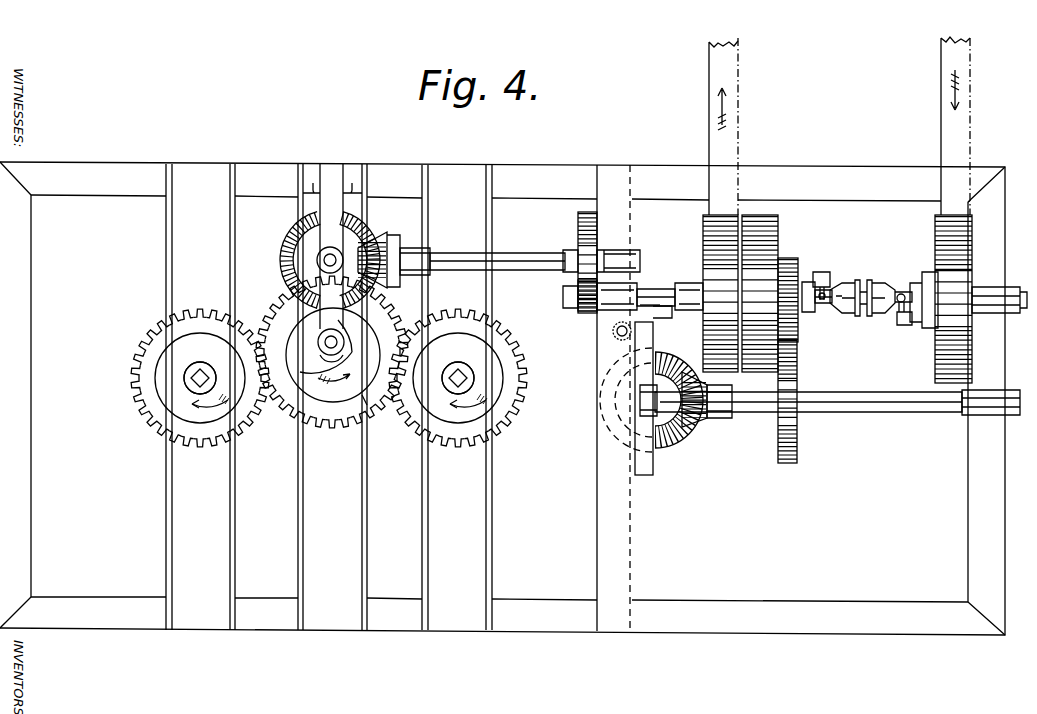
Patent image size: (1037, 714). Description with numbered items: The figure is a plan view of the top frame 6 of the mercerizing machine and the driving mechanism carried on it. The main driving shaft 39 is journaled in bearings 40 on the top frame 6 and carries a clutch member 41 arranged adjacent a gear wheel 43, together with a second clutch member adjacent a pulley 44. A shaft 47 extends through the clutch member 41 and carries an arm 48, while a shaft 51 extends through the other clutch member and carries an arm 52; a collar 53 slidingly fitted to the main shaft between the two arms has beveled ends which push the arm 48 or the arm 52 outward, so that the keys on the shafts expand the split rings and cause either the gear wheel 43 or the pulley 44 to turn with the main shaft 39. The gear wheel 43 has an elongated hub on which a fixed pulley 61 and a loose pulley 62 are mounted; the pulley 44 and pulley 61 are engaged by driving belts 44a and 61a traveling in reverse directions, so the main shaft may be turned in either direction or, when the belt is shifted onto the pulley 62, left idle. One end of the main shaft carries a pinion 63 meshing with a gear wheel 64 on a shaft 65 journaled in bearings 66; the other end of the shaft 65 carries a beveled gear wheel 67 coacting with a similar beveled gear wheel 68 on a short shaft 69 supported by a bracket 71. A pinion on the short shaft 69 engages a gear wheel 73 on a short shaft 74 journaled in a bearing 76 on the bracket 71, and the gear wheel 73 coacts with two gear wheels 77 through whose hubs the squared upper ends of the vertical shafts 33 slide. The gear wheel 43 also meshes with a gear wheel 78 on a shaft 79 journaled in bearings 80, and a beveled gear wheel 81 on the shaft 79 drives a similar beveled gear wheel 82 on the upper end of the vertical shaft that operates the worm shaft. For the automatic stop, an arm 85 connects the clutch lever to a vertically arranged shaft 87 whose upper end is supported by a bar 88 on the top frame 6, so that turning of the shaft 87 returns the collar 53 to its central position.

The top frame 6 is at (18, 345).
The vertical shafts 33 is at (202, 370).
The main driving shaft 39 is at (659, 292).
The bearings 40 is at (608, 306).
The clutch member 41 is at (806, 313).
The gear wheel 43 is at (798, 266).
The pulley 44 is at (936, 241).
The driving belt 44a is at (968, 102).
The shaft 47 is at (826, 276).
The arm 48 is at (830, 292).
The shaft 51 is at (916, 325).
The arm 52 is at (898, 320).
The collar 53 is at (846, 312).
The pulley 61 is at (778, 220).
The driving belt 61a is at (737, 94).
The pulley 62 is at (708, 240).
The pinion 63 is at (572, 312).
The gear wheel 64 is at (578, 230).
The shaft 65 is at (460, 252).
The bearings 66 is at (412, 258).
The beveled gear wheel 67 is at (384, 232).
The beveled gear wheel 68 is at (288, 236).
The short shaft 69 is at (322, 262).
The bracket 71 is at (355, 318).
The gear wheel 73 is at (365, 405).
The short shaft 74 is at (325, 343).
The bearing 76 is at (300, 388).
The gear wheels 77 is at (138, 398).
The gear wheel 78 is at (788, 464).
The shaft 79 is at (886, 412).
The bearings 80 is at (642, 402).
The beveled gear wheel 81 is at (702, 416).
The beveled gear wheel 82 is at (666, 440).
The arm 85 is at (668, 318).
The vertically arranged shaft 87 is at (616, 342).
The bar 88 is at (633, 330).